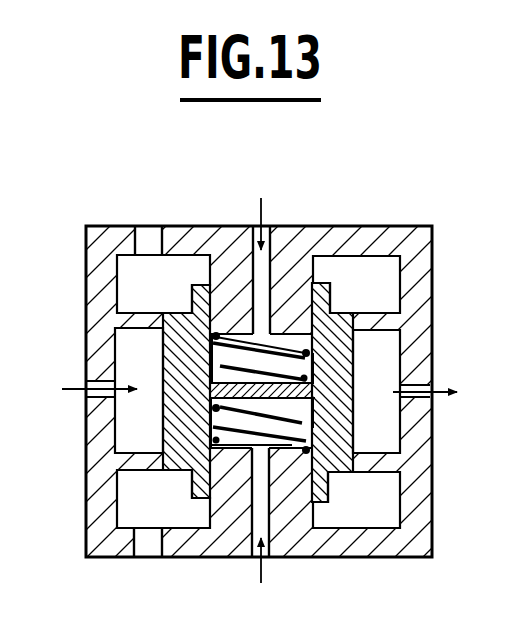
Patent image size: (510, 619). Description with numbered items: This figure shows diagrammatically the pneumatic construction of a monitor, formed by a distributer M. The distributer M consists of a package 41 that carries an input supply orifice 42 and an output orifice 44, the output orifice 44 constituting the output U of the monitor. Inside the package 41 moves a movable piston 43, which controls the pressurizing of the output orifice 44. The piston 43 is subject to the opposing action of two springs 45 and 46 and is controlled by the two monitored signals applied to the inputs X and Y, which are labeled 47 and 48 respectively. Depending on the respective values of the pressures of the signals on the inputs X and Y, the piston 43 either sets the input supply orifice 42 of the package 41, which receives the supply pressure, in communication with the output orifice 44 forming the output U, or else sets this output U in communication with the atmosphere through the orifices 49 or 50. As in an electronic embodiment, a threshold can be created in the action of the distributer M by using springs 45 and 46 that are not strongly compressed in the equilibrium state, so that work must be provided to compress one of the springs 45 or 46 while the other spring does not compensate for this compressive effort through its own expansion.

The package 41 is at (364, 238).
The input supply orifice 42 is at (97, 382).
The movable piston 43 is at (352, 357).
The output orifice 44 is at (412, 402).
The spring 45 is at (277, 336).
The spring 46 is at (308, 418).
The input X 47 is at (253, 230).
The input Y 48 is at (264, 556).
The orifice 49 is at (147, 238).
The orifice 50 is at (148, 543).
The input X is at (261, 277).
The input Y is at (262, 493).
The output U is at (408, 378).
The distributer M is at (240, 560).